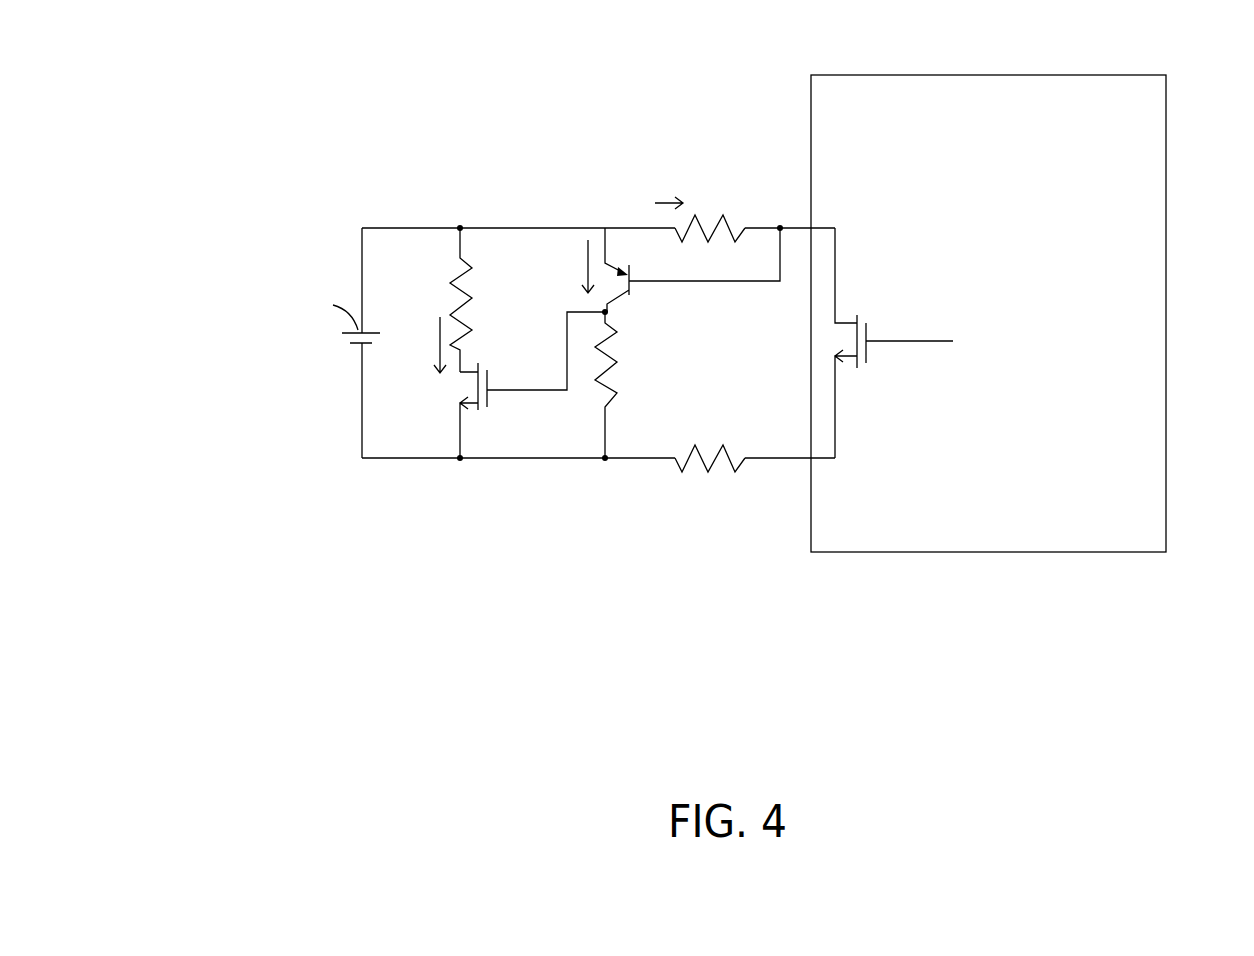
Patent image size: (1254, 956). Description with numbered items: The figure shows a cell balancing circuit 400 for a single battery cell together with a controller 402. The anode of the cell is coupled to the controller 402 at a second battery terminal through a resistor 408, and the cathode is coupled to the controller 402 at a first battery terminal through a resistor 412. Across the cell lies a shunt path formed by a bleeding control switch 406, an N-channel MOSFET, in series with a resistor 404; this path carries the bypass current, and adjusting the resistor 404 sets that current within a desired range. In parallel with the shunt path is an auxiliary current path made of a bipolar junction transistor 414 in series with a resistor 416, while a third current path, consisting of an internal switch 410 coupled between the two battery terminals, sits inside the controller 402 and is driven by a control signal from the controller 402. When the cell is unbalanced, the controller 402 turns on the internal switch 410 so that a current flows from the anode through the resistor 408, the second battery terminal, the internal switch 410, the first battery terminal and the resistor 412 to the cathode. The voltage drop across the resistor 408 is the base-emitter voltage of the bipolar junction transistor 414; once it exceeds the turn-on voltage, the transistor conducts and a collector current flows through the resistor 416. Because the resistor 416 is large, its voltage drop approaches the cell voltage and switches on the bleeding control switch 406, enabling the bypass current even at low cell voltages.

The cell balancing circuit 400 is at (272, 142).
The controller 402 is at (1166, 90).
The resistor 404 is at (452, 280).
The bleeding control switch 406 is at (489, 383).
The resistor 408 is at (697, 220).
The internal switch 410 is at (866, 328).
The resistor 412 is at (700, 452).
The bipolar junction transistor 414 is at (630, 295).
The resistor 416 is at (613, 390).